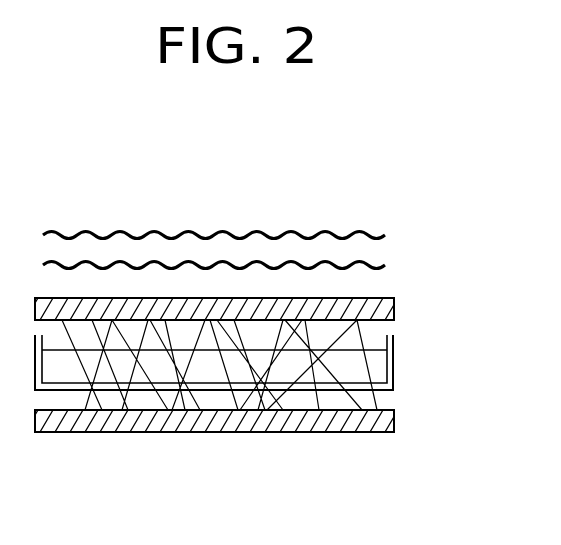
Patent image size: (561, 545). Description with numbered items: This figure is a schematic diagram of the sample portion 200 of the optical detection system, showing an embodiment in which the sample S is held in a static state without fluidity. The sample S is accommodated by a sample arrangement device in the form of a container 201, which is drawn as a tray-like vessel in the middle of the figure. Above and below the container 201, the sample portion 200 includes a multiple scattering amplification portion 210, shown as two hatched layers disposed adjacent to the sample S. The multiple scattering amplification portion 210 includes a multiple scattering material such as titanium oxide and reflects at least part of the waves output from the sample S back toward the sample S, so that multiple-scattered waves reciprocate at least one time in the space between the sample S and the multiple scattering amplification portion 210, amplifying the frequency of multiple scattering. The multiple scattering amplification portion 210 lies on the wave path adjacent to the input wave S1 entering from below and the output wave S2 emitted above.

The sample portion 200 is at (514, 157).
The multiple scattering amplification portion 210 is at (396, 308).
The container 201 is at (394, 363).
The sample S is at (219, 365).
The input wave S1 is at (213, 440).
The output wave S2 is at (403, 251).